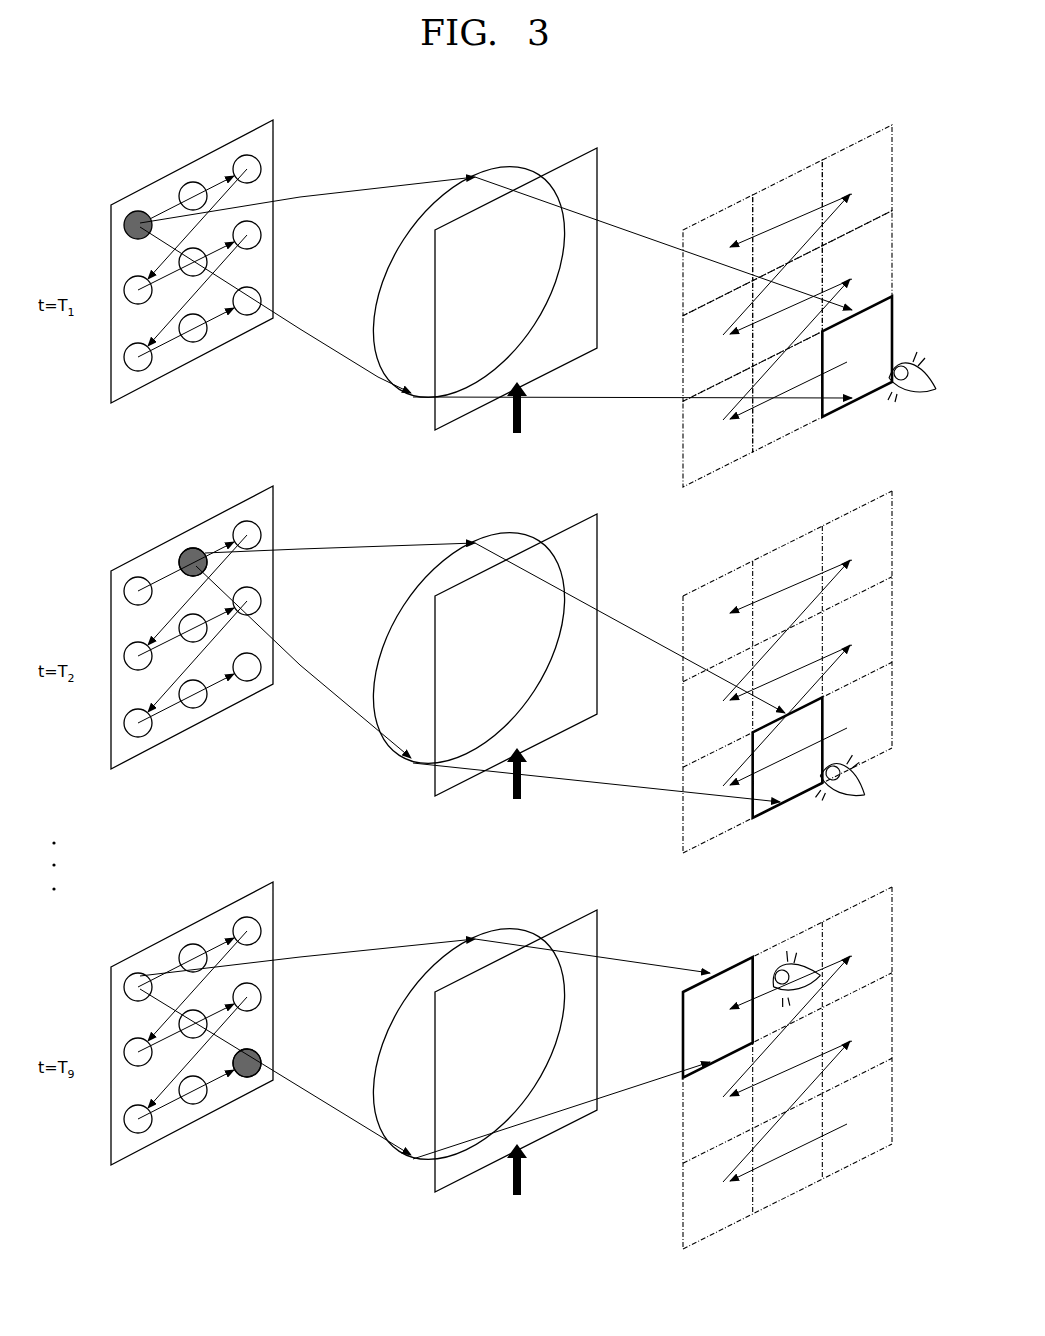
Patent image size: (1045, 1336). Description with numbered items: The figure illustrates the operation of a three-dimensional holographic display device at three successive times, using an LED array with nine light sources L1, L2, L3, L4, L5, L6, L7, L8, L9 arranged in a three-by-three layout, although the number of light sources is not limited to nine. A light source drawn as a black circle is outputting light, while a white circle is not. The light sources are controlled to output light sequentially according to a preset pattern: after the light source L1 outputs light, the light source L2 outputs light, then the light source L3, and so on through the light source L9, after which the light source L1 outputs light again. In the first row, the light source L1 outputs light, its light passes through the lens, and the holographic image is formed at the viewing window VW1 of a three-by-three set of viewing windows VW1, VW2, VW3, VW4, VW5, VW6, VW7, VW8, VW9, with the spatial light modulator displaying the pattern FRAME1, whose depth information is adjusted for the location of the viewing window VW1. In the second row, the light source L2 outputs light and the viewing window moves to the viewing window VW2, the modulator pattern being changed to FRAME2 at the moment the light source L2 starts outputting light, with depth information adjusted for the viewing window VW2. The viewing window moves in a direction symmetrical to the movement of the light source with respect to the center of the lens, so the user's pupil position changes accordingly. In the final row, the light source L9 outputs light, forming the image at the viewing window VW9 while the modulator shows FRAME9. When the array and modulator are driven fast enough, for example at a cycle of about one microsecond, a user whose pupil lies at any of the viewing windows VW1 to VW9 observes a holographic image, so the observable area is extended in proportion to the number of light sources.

The light source L1 is at (136, 215).
The light source L2 is at (191, 369).
The light source L3 is at (245, 159).
The light source L4 is at (136, 280).
The light source L5 is at (191, 252).
The light source L6 is at (245, 225).
The light source L7 is at (136, 347).
The light source L8 is at (191, 318).
The light source L9 is at (245, 672).
The viewing window VW1 is at (857, 356).
The viewing window VW2 is at (788, 574).
The viewing window VW3 is at (718, 426).
The viewing window VW4 is at (857, 271).
The viewing window VW5 is at (788, 306).
The viewing window VW6 is at (718, 341).
The viewing window VW7 is at (857, 185).
The viewing window VW8 is at (788, 220).
The viewing window VW9 is at (718, 636).
The Frame 1 FRAME1 is at (515, 455).
The Frame 2 FRAME2 is at (515, 821).
The Frame 9 FRAME9 is at (515, 1217).